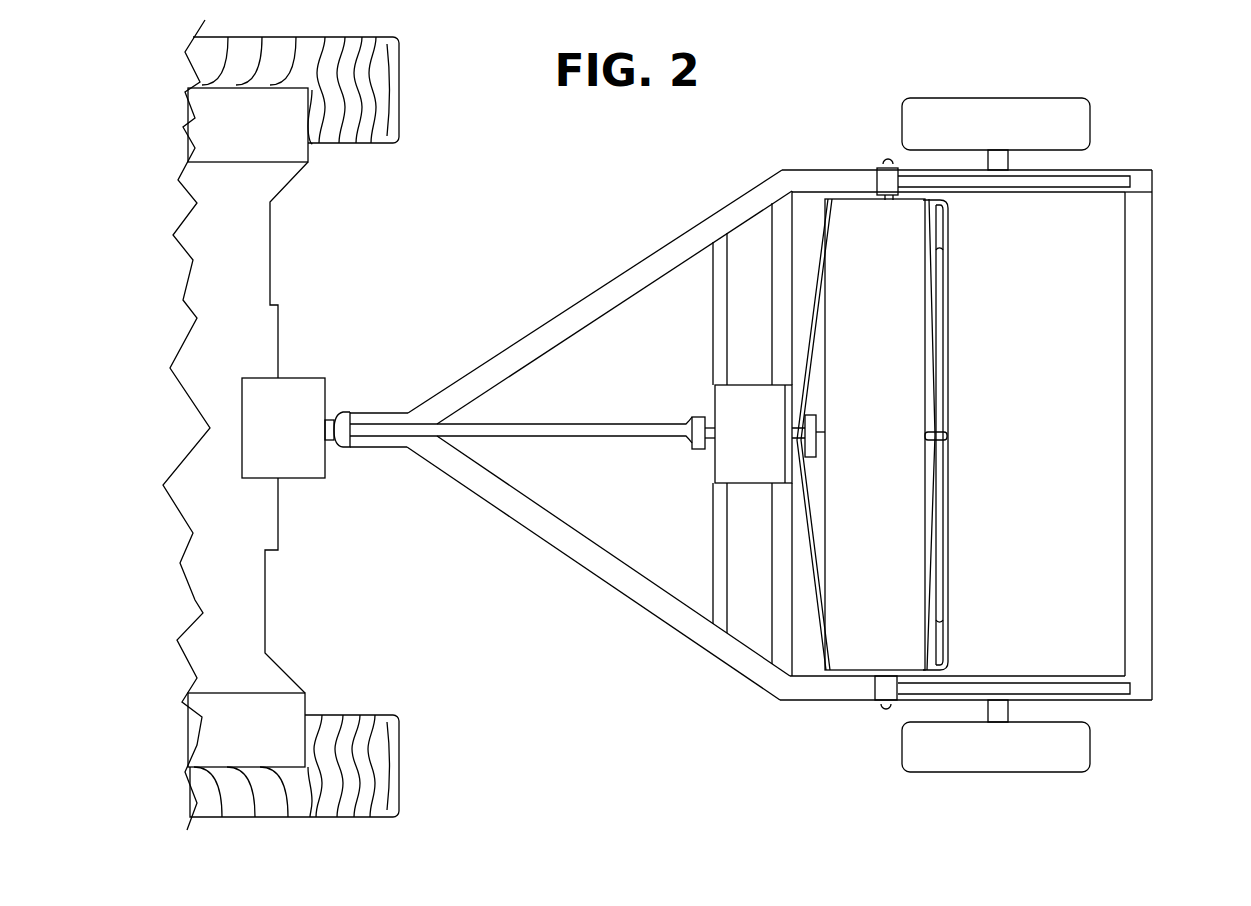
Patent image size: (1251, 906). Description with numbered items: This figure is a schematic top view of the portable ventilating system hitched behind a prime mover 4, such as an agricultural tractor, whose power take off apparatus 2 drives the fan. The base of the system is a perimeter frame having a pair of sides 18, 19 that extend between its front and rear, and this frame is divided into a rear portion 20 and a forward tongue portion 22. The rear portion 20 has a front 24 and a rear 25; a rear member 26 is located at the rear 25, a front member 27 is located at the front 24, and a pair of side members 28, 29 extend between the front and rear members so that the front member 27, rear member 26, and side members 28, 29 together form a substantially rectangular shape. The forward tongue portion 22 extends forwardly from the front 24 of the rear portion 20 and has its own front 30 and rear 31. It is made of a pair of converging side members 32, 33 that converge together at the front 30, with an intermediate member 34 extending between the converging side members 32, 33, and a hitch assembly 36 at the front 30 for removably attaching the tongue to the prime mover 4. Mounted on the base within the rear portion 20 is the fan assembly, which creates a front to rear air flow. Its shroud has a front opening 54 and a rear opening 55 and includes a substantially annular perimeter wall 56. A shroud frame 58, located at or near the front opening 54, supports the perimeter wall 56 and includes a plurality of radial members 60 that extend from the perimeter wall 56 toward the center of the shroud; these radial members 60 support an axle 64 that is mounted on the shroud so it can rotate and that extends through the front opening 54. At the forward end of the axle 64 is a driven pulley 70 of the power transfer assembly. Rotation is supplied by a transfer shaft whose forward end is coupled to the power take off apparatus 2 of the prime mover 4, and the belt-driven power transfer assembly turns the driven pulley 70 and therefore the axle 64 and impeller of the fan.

The power take off apparatus 2 is at (287, 403).
The prime mover 4 is at (332, 250).
The side of perimeter frame 18 is at (798, 687).
The side of perimeter frame 19 is at (802, 182).
The rear portion 20 is at (872, 158).
The forward tongue portion 22 is at (566, 277).
The front of rear portion 24 is at (760, 256).
The rear of rear portion 25 is at (1160, 252).
The rear member 26 is at (1135, 340).
The front member 27 is at (770, 640).
The side member 28 is at (852, 685).
The side member 29 is at (842, 180).
The front of forward tongue portion 30 is at (433, 478).
The rear of forward tongue portion 31 is at (760, 696).
The converging side member 32 is at (606, 556).
The converging side member 33 is at (528, 347).
The intermediate member 34 is at (717, 590).
The hitch assembly 36 is at (400, 446).
The front opening 54 is at (823, 325).
The rear opening 55 is at (952, 332).
The perimeter wall 56 is at (905, 308).
The shroud frame 58 is at (818, 549).
The radial members 60 is at (803, 518).
The axle 64 is at (817, 452).
The driven pulley 70 is at (816, 420).